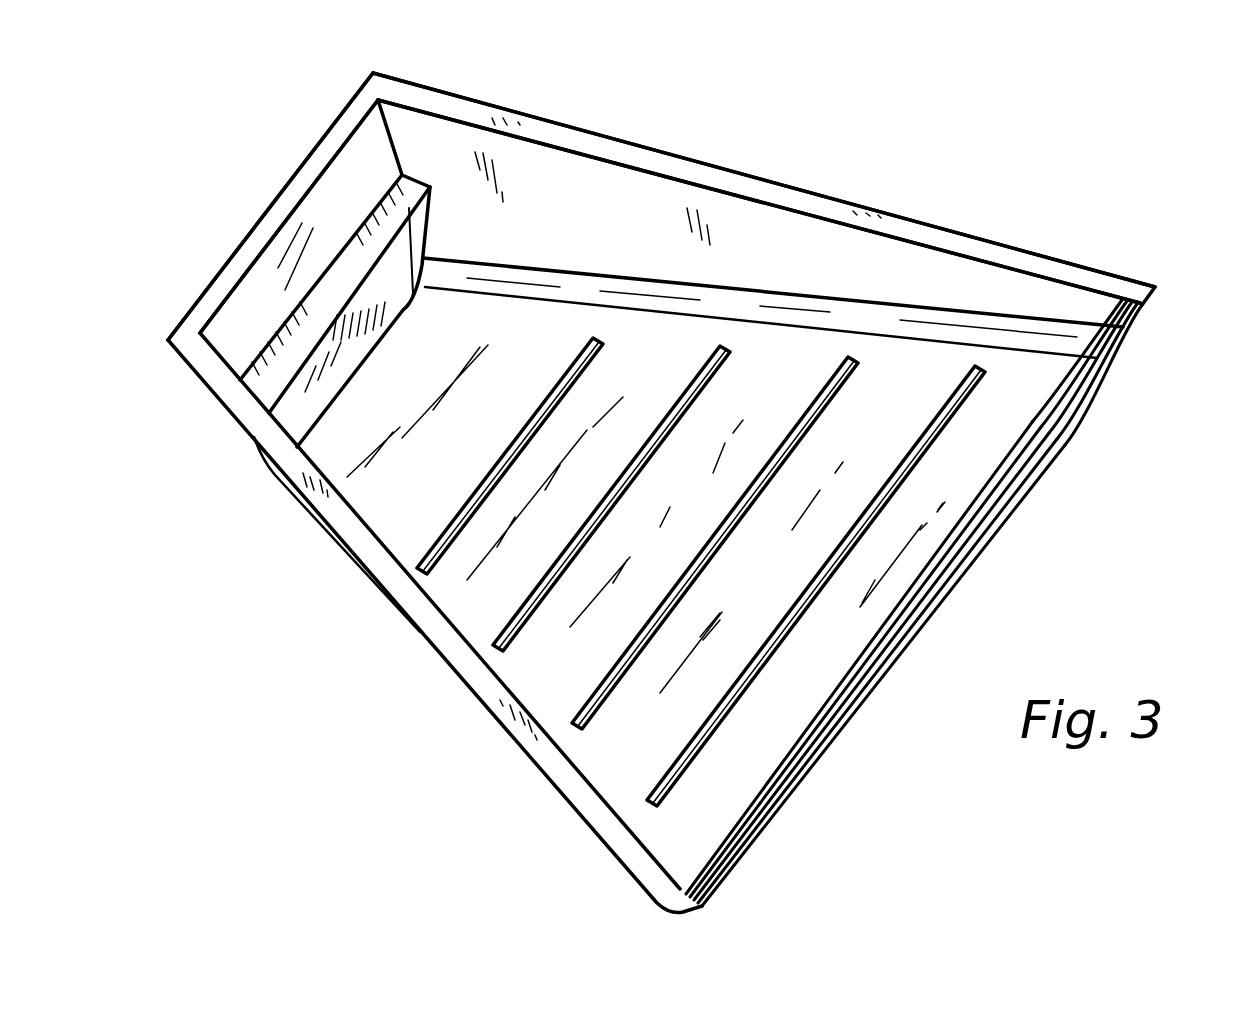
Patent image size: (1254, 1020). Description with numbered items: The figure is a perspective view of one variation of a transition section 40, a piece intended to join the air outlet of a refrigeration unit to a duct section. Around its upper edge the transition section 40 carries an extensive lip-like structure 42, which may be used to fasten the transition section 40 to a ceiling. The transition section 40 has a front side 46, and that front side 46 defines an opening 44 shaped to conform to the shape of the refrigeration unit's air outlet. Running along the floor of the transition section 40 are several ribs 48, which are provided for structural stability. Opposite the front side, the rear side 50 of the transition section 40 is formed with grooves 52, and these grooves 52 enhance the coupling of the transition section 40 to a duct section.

The transition section 40 is at (1089, 168).
The lip-like structure 42 is at (440, 92).
The opening 44 is at (463, 400).
The front side 46 is at (199, 250).
The ribs 48 is at (538, 433).
The rear side 50 is at (1107, 381).
The grooves 52 is at (785, 790).